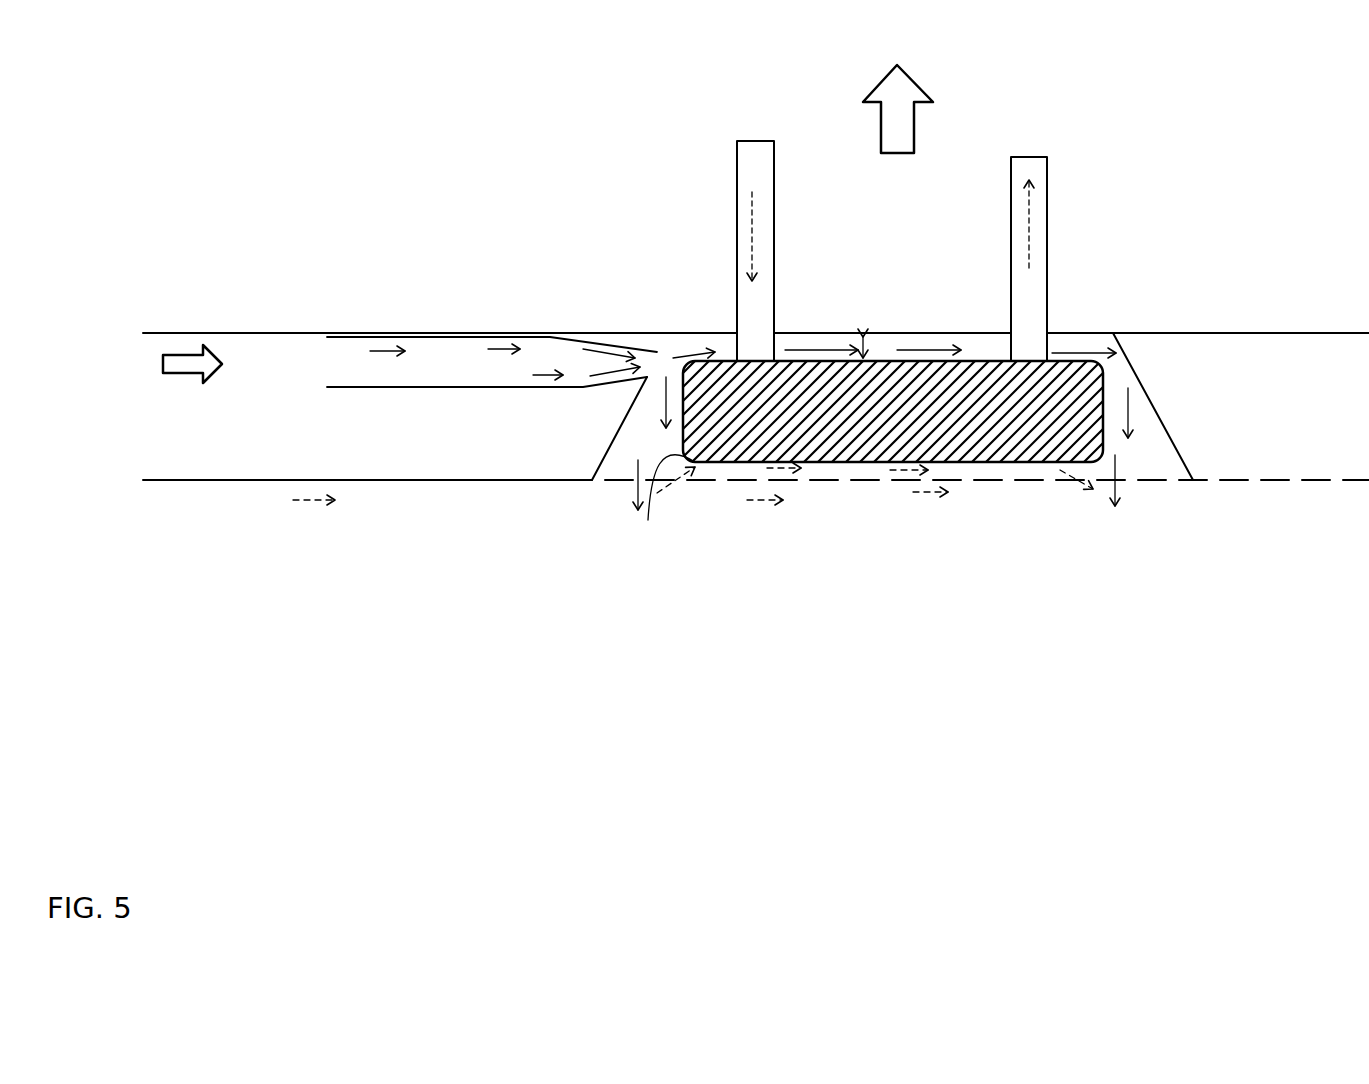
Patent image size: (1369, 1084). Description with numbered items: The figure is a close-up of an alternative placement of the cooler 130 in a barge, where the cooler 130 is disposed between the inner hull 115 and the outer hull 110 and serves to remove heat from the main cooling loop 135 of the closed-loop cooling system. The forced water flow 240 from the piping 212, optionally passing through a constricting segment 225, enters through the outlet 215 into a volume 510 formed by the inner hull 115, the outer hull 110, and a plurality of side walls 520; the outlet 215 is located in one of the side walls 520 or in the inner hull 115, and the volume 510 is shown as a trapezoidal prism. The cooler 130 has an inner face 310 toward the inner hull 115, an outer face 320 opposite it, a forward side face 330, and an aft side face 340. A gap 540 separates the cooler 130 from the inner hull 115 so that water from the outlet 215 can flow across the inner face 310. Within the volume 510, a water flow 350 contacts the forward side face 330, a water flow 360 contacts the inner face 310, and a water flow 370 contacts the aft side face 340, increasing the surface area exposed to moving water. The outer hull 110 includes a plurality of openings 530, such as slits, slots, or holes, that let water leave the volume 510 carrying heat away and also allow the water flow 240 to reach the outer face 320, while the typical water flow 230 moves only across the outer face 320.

The outer hull 110 is at (273, 479).
The inner hull 115 is at (1107, 337).
The cooler 130 is at (750, 462).
The main cooling loop 135 is at (1049, 208).
The piping 212 is at (428, 333).
The outlet 215 is at (655, 362).
The constricting segment 225 is at (627, 350).
The water flow 230 is at (518, 500).
The water flow 240 is at (453, 367).
The inner face 310 is at (1000, 360).
The outer face 320 is at (852, 462).
The forward side face 330 is at (648, 520).
The aft side face 340 is at (1103, 433).
The water flow 350 is at (663, 413).
The water flow 360 is at (947, 337).
The water flow 370 is at (1128, 416).
The volume 510 is at (1125, 372).
The side walls 520 is at (1137, 352).
The openings 530 is at (998, 484).
The gap 540 is at (880, 337).